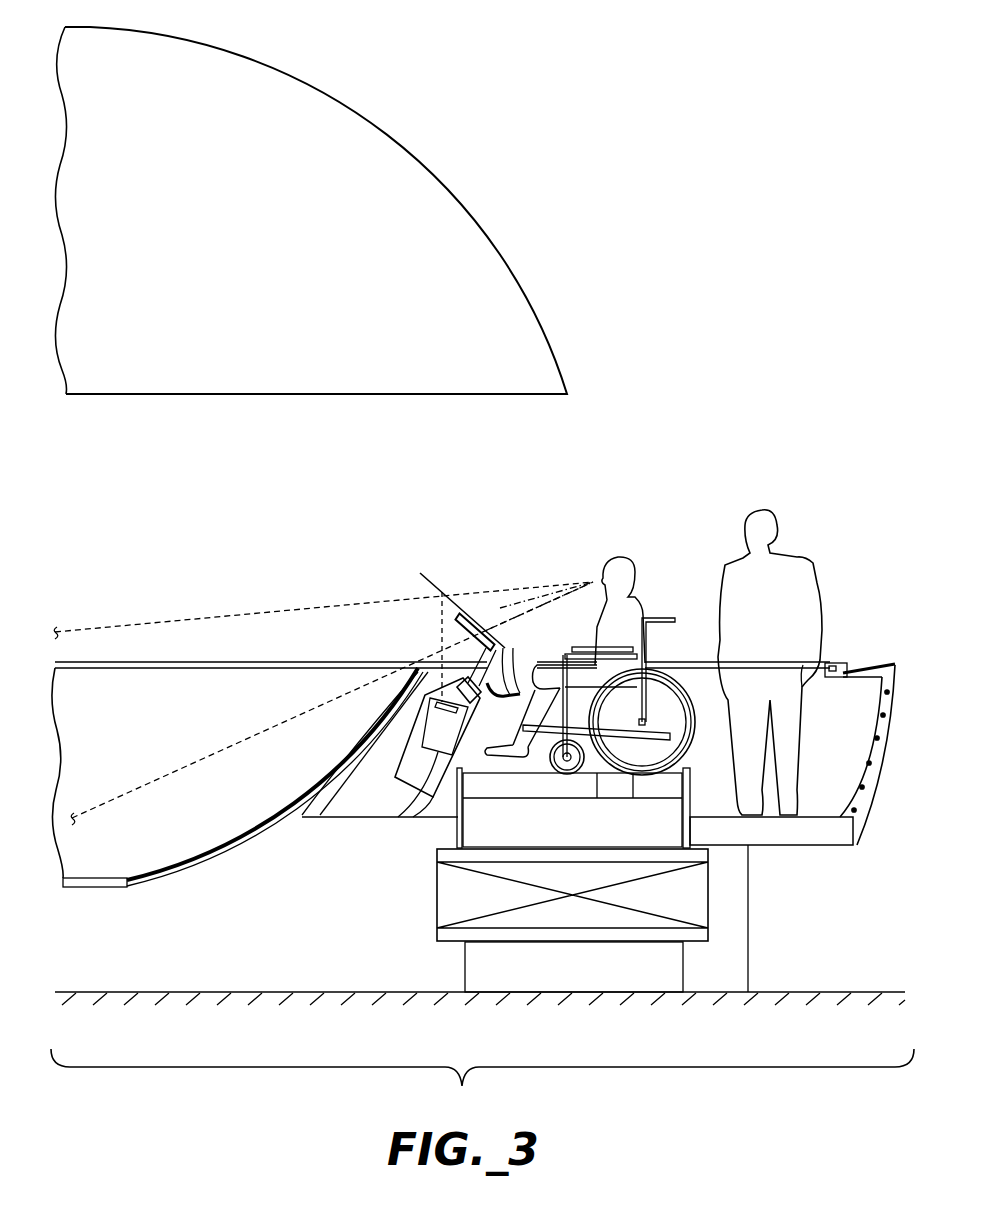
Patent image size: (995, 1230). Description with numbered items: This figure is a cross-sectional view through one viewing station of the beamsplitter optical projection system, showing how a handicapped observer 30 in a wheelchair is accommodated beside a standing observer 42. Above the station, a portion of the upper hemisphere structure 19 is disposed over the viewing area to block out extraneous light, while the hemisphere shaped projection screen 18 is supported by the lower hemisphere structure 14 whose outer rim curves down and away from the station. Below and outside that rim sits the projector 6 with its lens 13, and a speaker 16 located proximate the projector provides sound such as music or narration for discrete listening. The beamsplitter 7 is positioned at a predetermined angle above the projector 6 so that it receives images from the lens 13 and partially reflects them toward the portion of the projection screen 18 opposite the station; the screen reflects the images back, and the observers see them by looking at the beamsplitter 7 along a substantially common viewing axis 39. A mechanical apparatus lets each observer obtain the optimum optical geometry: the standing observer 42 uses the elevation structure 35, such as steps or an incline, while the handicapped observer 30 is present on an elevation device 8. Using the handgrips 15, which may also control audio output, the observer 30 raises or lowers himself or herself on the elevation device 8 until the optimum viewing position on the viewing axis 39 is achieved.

The upper hemisphere structure 19 is at (557, 348).
The projection screen 18 is at (243, 840).
The lower hemisphere structure 14 is at (183, 873).
The lens 13 is at (440, 714).
The projector 6 is at (400, 822).
The beamsplitter 7 is at (432, 578).
The speaker 16 is at (476, 682).
The handgrips 15 is at (513, 650).
The viewing axis 39 is at (538, 583).
The handicapped observer 30 is at (642, 607).
The observer 42 is at (798, 560).
The elevation structure 35 is at (778, 845).
The elevation device 8 is at (427, 850).